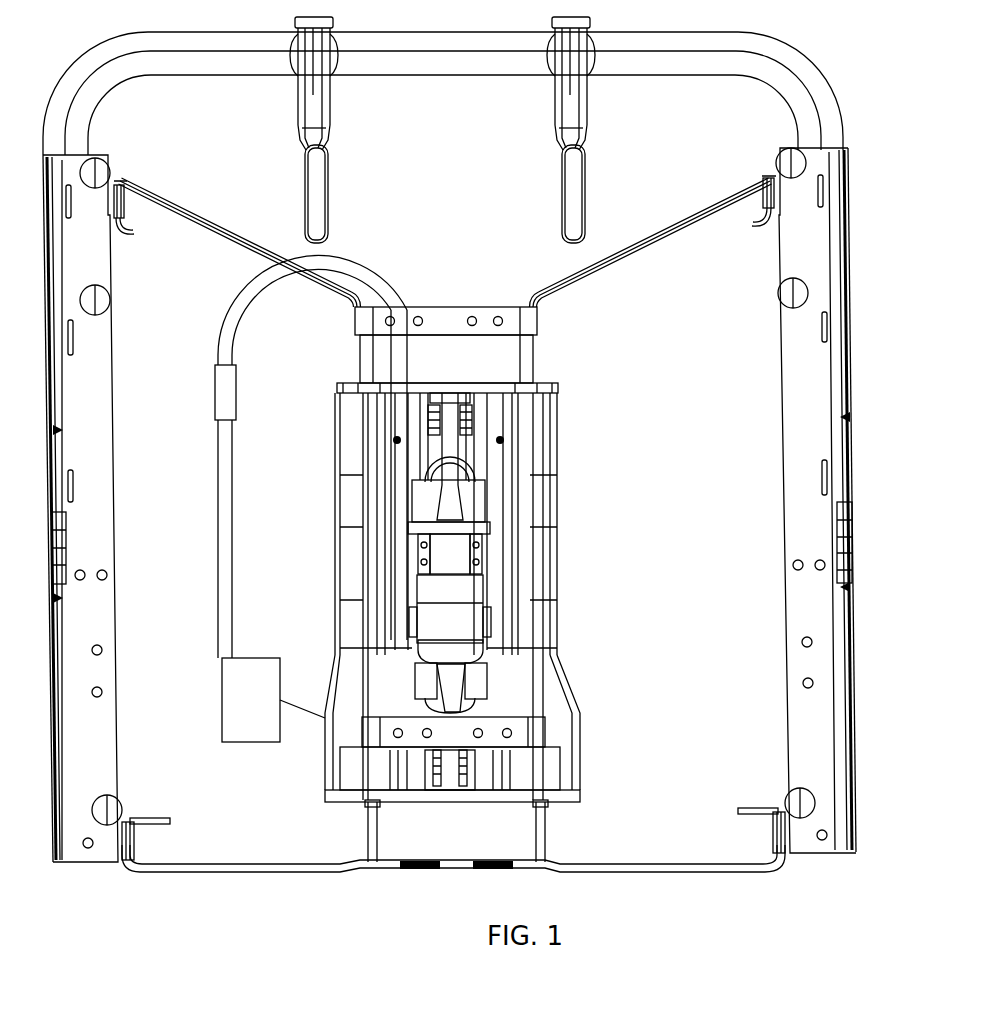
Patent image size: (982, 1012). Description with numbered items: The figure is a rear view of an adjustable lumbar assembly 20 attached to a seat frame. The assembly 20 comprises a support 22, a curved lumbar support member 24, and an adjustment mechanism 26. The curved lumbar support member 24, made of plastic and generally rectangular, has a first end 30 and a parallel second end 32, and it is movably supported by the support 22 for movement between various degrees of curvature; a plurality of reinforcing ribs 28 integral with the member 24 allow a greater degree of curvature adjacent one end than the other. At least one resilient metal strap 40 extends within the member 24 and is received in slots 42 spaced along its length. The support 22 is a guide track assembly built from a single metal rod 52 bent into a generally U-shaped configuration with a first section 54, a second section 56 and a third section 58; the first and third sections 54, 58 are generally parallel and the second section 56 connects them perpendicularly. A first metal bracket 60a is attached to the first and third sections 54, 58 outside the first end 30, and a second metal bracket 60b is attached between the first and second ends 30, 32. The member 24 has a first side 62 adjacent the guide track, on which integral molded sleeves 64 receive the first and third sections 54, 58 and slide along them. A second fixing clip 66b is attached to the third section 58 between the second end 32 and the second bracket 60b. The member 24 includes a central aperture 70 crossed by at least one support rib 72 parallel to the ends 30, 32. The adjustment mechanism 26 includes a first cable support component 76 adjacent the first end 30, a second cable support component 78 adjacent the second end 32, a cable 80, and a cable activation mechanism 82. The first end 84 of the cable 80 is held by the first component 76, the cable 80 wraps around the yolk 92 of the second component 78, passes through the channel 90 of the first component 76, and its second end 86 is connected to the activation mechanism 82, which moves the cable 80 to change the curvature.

The adjustable lumbar assembly 20 is at (567, 456).
The support 22 is at (650, 252).
The curved lumbar support member 24 is at (567, 578).
The adjustment mechanism 26 is at (230, 306).
The reinforcing ribs 28 is at (383, 465).
The first end 30 is at (462, 386).
The second end 32 is at (465, 798).
The resilient metal strap 40 is at (377, 513).
The slots 42 is at (407, 385).
The metal rod 52 is at (543, 377).
The first section 54 is at (395, 530).
The second section 56 is at (458, 870).
The third section 58 is at (490, 690).
The first metal bracket 60a is at (484, 310).
The second metal bracket 60b is at (522, 733).
The first side 62 is at (347, 503).
The integral molded sleeves 64 is at (352, 384).
The second fixing clip 66b is at (545, 798).
The central aperture 70 is at (443, 622).
The support rib 72 is at (405, 562).
The first cable support component 76 is at (470, 527).
The second cable support component 78 is at (455, 687).
The cable 80 is at (218, 367).
The cable activation mechanism 82 is at (251, 700).
The first end 84 is at (487, 546).
The second end 86 is at (222, 645).
The channel 90 is at (343, 472).
The yolk 92 is at (497, 647).